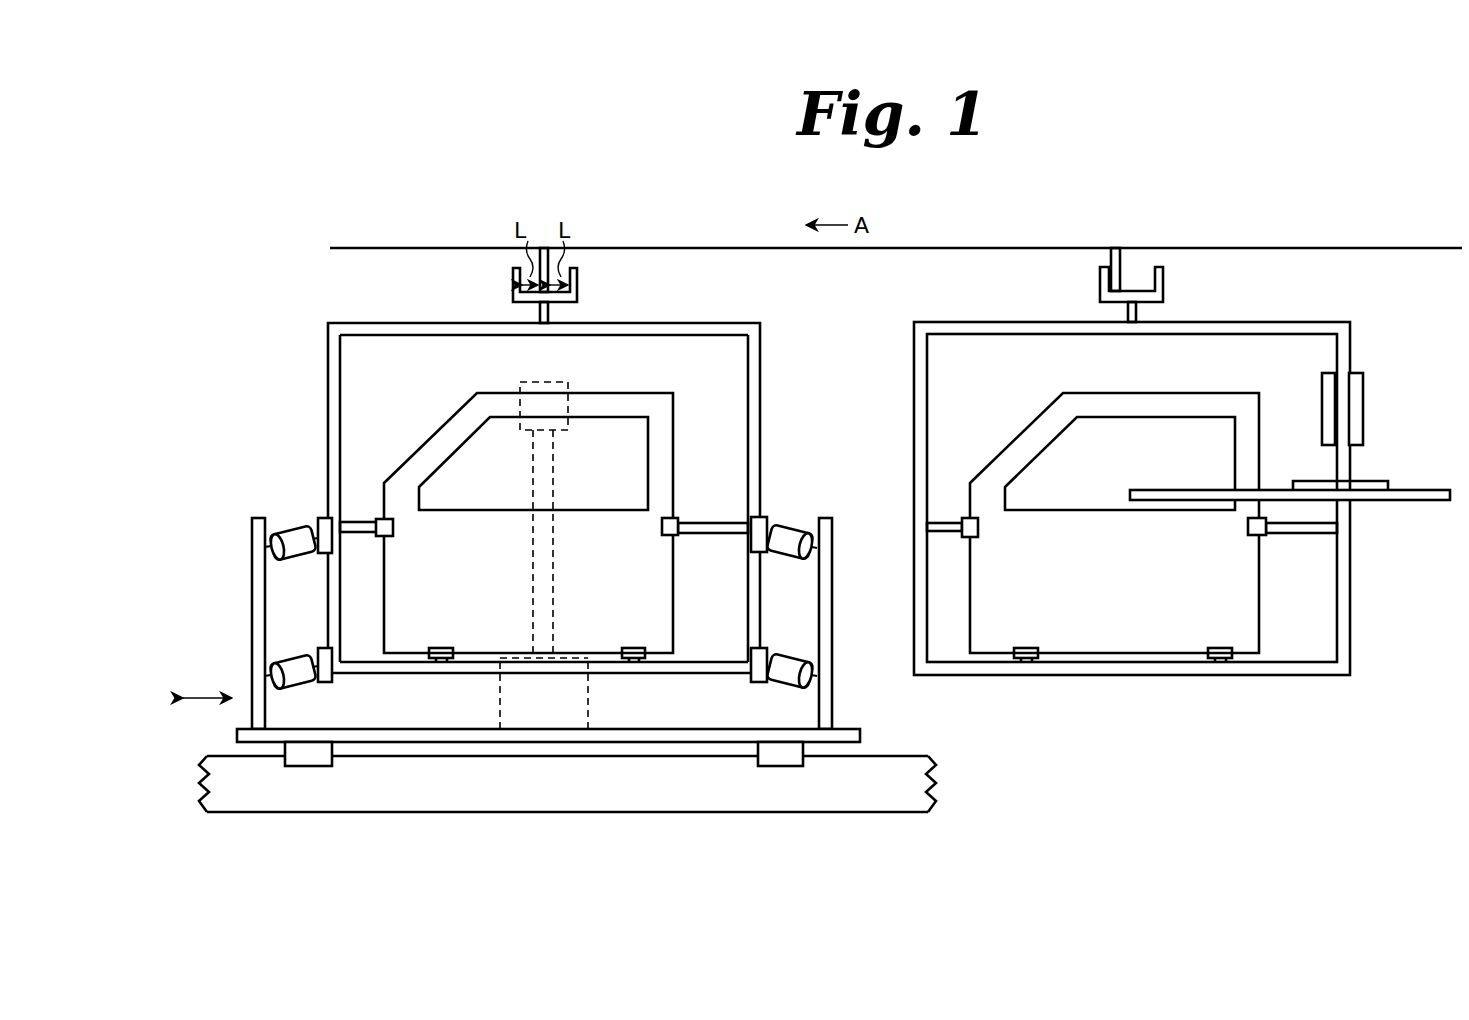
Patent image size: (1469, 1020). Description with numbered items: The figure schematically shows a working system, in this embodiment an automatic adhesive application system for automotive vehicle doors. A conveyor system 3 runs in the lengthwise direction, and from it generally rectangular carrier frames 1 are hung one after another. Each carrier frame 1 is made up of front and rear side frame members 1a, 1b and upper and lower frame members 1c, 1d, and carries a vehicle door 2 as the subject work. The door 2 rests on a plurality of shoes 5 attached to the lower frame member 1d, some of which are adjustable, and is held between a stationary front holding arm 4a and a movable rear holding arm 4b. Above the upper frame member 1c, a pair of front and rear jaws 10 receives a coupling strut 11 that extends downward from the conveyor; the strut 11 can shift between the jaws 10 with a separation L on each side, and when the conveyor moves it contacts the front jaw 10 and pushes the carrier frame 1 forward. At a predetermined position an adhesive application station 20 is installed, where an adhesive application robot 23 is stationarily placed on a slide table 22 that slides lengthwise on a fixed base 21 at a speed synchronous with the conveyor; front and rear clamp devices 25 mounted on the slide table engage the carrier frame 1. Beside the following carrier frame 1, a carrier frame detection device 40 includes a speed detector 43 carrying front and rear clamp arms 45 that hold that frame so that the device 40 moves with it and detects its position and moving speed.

The carrier frame 1 is at (839, 497).
The front side frame member 1a is at (328, 385).
The rear side frame member 1b is at (760, 358).
The upper frame member 1c is at (392, 323).
The lower frame member 1d is at (680, 675).
The vehicle door 2 is at (433, 440).
The conveyor system 3 is at (955, 247).
The front holding arm 4a is at (367, 520).
The rear holding arm 4b is at (707, 520).
The shoes 5 is at (1024, 665).
The jaws 10 is at (513, 289).
The coupling strut 11 is at (545, 247).
The adhesive application station 20 is at (529, 686).
The base 21 is at (904, 756).
The slide table 22 is at (854, 728).
The adhesive application robot 23 is at (562, 376).
The clamp devices 25 is at (320, 514).
The carrier frame detection device 40 is at (1380, 475).
The speed detector 43 is at (1350, 404).
The clamp arms 45 is at (1322, 378).